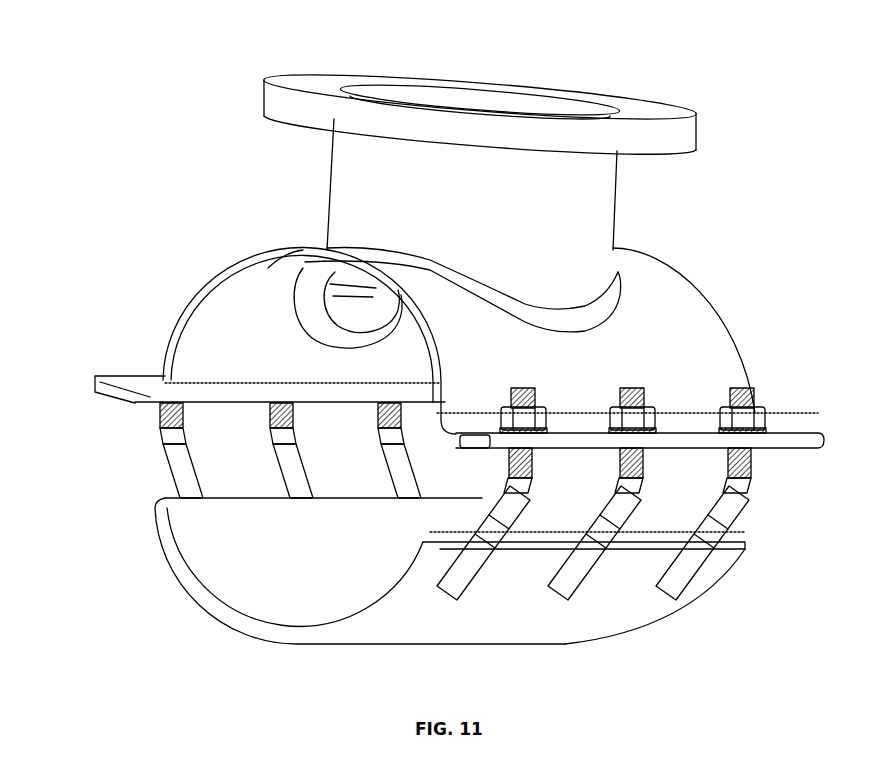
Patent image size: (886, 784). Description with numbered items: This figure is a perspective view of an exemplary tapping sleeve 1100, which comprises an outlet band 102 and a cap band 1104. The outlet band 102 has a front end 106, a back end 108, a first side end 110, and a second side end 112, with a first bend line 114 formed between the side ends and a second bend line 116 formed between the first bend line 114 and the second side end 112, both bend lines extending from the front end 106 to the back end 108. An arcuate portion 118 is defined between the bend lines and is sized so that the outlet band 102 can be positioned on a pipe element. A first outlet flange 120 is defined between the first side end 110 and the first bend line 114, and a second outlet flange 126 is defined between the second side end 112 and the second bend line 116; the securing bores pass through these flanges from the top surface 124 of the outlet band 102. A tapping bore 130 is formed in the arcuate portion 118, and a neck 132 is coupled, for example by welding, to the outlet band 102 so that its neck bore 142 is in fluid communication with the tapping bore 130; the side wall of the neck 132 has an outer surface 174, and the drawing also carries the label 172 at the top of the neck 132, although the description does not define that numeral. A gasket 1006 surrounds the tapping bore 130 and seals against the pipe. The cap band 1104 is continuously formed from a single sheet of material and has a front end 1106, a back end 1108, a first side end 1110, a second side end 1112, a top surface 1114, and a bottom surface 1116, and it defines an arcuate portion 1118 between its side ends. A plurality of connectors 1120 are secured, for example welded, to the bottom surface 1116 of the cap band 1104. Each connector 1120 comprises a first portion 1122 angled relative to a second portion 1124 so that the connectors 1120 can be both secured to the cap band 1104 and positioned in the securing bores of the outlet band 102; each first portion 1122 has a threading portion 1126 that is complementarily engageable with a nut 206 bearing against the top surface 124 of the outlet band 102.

The tapping sleeve 1100 is at (156, 62).
The outlet band 102 is at (465, 332).
The front end 106 is at (285, 275).
The back end 108 is at (628, 250).
The first side end 110 is at (93, 388).
The second side end 112 is at (815, 432).
The first bend line 114 is at (200, 385).
The second bend line 116 is at (440, 418).
The arcuate portion 118 is at (233, 290).
The first outlet flange 120 is at (130, 378).
The top surface 124 is at (700, 295).
The second outlet flange 126 is at (802, 425).
The tapping bore 130 is at (348, 278).
The neck 132 is at (619, 165).
The neck bore 142 is at (512, 86).
The flange bore 172 is at (438, 82).
The outer surface 174 is at (333, 165).
The nut 206 is at (510, 405).
The gasket 1006 is at (292, 262).
The cap band 1104 is at (451, 580).
The front end 1106 is at (235, 620).
The back end 1108 is at (735, 550).
The first side end 1110 is at (170, 499).
The second side end 1112 is at (728, 536).
The top surface 1114 is at (180, 560).
The bottom surface 1116 is at (432, 645).
The arcuate portion 1118 is at (308, 650).
The connector 1120 is at (158, 418).
The first portion 1122 is at (162, 440).
The second portion 1124 is at (733, 597).
The threading portion 1126 is at (186, 432).